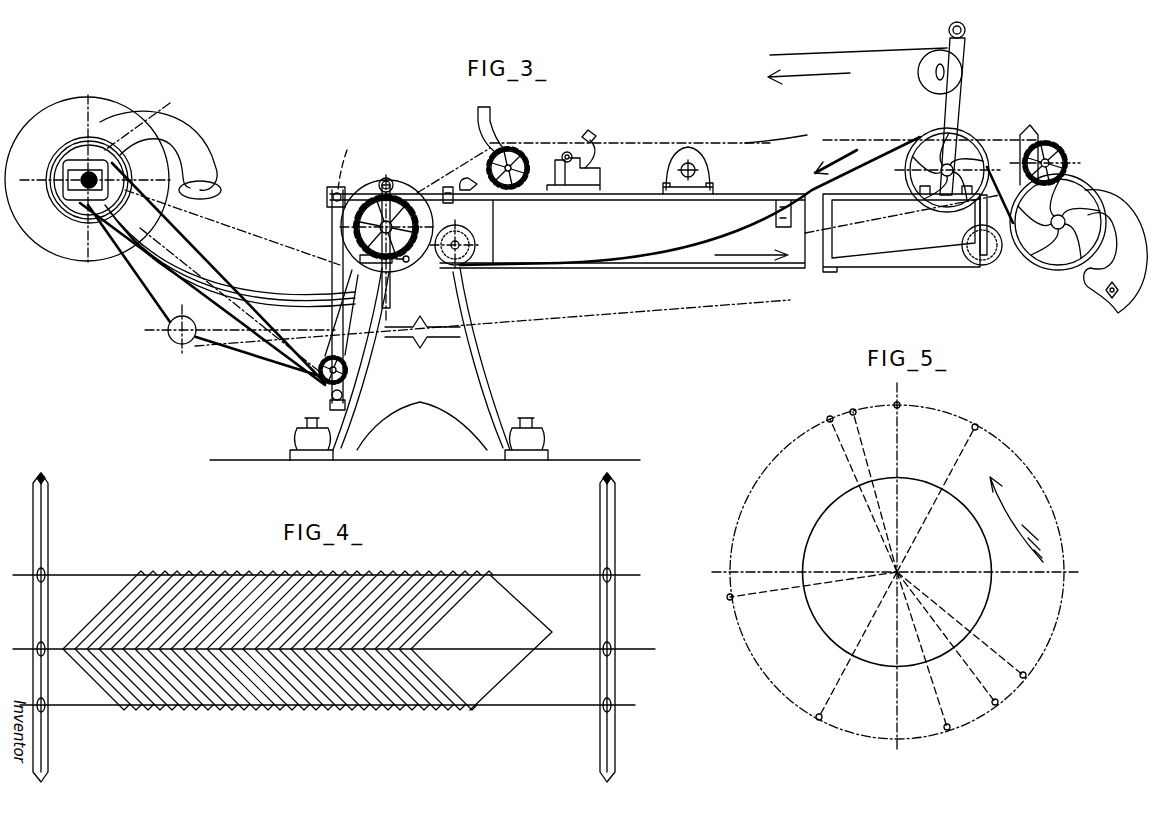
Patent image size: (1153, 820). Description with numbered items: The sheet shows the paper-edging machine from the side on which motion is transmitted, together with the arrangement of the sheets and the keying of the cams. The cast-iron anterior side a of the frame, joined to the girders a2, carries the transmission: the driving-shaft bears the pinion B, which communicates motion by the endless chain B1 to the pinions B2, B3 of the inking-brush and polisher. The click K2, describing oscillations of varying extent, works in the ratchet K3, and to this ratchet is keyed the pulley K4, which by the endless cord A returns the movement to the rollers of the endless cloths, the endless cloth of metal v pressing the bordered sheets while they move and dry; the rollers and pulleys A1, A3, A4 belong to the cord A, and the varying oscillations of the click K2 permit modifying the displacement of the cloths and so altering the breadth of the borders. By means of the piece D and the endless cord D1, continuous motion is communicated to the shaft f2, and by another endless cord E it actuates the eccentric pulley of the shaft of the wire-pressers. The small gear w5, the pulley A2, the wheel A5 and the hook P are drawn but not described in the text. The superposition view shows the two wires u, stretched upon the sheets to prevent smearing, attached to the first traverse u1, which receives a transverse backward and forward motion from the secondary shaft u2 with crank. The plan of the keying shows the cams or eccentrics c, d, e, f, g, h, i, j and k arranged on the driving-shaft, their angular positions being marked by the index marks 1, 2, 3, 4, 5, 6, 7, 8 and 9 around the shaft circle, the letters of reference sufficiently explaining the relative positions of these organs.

In FIG. 3, the anterior side a is at (419, 364).
In FIG. 3, the endless cord A is at (655, 216).
In FIG. 3, the girder a2 is at (751, 245).
In FIG. 3, the piece D is at (87, 179).
In FIG. 3, the cam or eccentric h is at (85, 169).
In FIG. 5, the cam or eccentric h is at (947, 495).
In FIG. 3, the endless cord E is at (220, 188).
In FIG. 3, the pinion B is at (230, 223).
In FIG. 3, the ratchet K3 is at (218, 273).
In FIG. 3, the endless cord D1 is at (435, 294).
In FIG. 3, the small pinion w5 is at (327, 378).
In FIG. 3, the shaft f2 is at (341, 161).
In FIG. 5, the shaft f2 is at (833, 707).
In FIG. 3, the pulley K4 is at (387, 215).
In FIG. 3, the cam or eccentric k is at (386, 247).
In FIG. 5, the cam or eccentric k is at (800, 593).
In FIG. 3, the click K2 is at (386, 235).
In FIG. 3, the roller or pulley A3 is at (455, 236).
In FIG. 3, the pinion B2 is at (477, 155).
In FIG. 3, the wire u is at (543, 190).
In FIG. 4, the wire u is at (334, 634).
In FIG. 3, the secondary shaft u2 is at (678, 170).
In FIG. 4, the secondary shaft u2 is at (621, 627).
In FIG. 3, the endless chain B1 is at (763, 226).
In FIG. 3, the endless cloth of metal v is at (846, 106).
In FIG. 3, the roller or pulley A1 is at (975, 133).
In FIG. 3, the roller or pulley A4 is at (947, 162).
In FIG. 3, the pulley A2 is at (982, 251).
In FIG. 3, the pinion B3 is at (1050, 154).
In FIG. 3, the drive wheel A5 is at (1058, 229).
In FIG. 3, the hook P is at (1100, 202).
In FIG. 4, the first traverse u1 is at (28, 627).
In FIG. 5, the cam or eccentric c is at (904, 397).
In FIG. 5, the cam or eccentric e is at (873, 490).
In FIG. 5, the cam or eccentric g is at (848, 491).
In FIG. 5, the cam or eccentric d is at (934, 659).
In FIG. 5, the cam or eccentric f is at (852, 646).
In FIG. 5, the cam or eccentric i is at (971, 632).
In FIG. 5, the cam or eccentric j is at (956, 648).
In FIG. 5, the position 1 is at (897, 393).
In FIG. 5, the position 2 is at (853, 397).
In FIG. 5, the position 3 is at (828, 405).
In FIG. 5, the position 4 is at (717, 587).
In FIG. 5, the position 5 is at (808, 727).
In FIG. 5, the position 6 is at (949, 739).
In FIG. 5, the position 7 is at (1000, 717).
In FIG. 5, the position 8 is at (1030, 693).
In FIG. 5, the position 9 is at (983, 415).